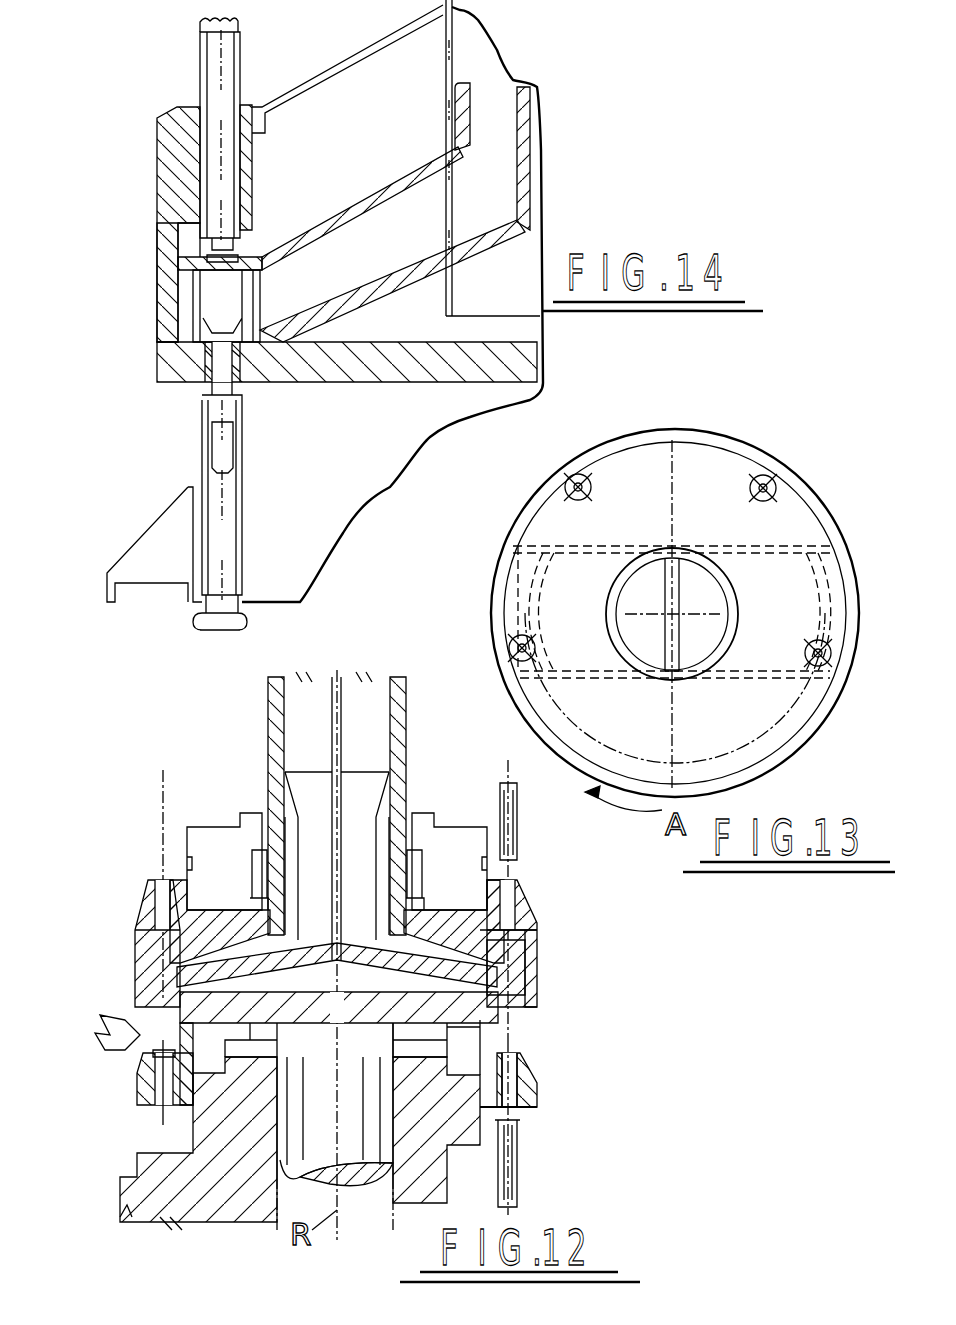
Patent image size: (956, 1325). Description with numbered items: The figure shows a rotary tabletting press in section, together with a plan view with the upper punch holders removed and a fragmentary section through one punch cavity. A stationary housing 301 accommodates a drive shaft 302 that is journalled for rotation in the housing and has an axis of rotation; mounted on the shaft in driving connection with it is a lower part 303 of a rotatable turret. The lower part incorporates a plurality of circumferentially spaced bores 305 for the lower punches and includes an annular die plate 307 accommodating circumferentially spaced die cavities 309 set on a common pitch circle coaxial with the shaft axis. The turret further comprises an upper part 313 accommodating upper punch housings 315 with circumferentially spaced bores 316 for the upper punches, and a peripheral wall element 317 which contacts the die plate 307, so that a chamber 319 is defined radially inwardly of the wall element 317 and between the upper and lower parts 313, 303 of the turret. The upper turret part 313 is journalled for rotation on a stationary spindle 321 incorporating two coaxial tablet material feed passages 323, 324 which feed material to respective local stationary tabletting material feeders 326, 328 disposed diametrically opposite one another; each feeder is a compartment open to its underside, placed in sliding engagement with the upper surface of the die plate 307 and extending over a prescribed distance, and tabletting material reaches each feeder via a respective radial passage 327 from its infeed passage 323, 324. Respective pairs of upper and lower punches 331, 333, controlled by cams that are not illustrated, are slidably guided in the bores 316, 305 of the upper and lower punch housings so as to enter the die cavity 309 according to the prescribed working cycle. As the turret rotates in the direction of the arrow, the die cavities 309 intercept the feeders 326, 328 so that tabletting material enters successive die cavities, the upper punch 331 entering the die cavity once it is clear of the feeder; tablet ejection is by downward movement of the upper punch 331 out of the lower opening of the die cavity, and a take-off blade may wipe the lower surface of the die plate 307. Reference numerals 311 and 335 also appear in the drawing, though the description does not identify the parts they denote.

In FIG. 12, the stationary housing 301 is at (130, 1195).
In FIG. 12, the drive shaft 302 is at (315, 1137).
In FIG. 12, the lower part of rotatable turret 303 is at (425, 1007).
In FIG. 14, the bores for lower punches 305 is at (175, 540).
In FIG. 12, the bores for lower punches 305 is at (155, 1070).
In FIG. 14, the annular die plate 307 is at (160, 368).
In FIG. 14, the die cavities 309 is at (240, 367).
In FIG. 13, the die cavities 309 is at (572, 487).
In FIG. 12, the die cavities 309 is at (150, 938).
In FIG. 12, the ring 311 is at (540, 916).
In FIG. 12, the upper part of turret 313 is at (270, 855).
In FIG. 14, the upper punch housings 315 is at (180, 174).
In FIG. 12, the upper punch housings 315 is at (530, 896).
In FIG. 12, the bores for upper punches 316 is at (522, 878).
In FIG. 14, the peripheral wall element 317 is at (167, 290).
In FIG. 13, the peripheral wall element 317 is at (745, 770).
In FIG. 12, the peripheral wall element 317 is at (540, 960).
In FIG. 14, the chamber 319 is at (200, 280).
In FIG. 12, the chamber 319 is at (545, 940).
In FIG. 13, the stationary spindle 321 is at (660, 548).
In FIG. 12, the stationary spindle 321 is at (395, 787).
In FIG. 13, the tablet material feed passage 323 is at (690, 598).
In FIG. 12, the tablet material feed passage 323 is at (352, 773).
In FIG. 14, the tablet material feed passage 324 is at (495, 128).
In FIG. 13, the tablet material feed passage 324 is at (645, 592).
In FIG. 12, the tablet material feed passage 324 is at (300, 730).
In FIG. 14, the local stationary tabletting material feeder 326 is at (195, 312).
In FIG. 13, the local stationary tabletting material feeder 326 is at (528, 617).
In FIG. 12, the local stationary tabletting material feeder 326 is at (160, 975).
In FIG. 14, the radial passage 327 is at (325, 265).
In FIG. 13, the radial passage 327 is at (593, 670).
In FIG. 12, the radial passage 327 is at (237, 950).
In FIG. 13, the local stationary tabletting material feeder 328 is at (833, 660).
In FIG. 12, the local stationary tabletting material feeder 328 is at (455, 985).
In FIG. 14, the upper punch 331 is at (220, 180).
In FIG. 14, the lower punch 333 is at (220, 537).
In FIG. 12, the hook 335 is at (125, 1020).